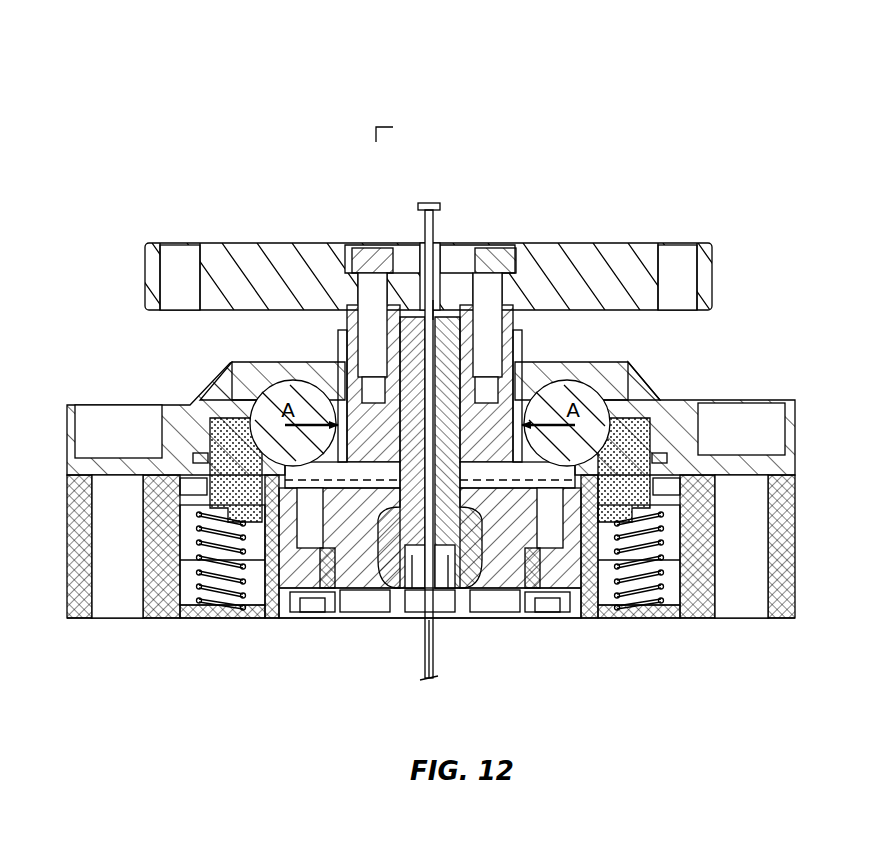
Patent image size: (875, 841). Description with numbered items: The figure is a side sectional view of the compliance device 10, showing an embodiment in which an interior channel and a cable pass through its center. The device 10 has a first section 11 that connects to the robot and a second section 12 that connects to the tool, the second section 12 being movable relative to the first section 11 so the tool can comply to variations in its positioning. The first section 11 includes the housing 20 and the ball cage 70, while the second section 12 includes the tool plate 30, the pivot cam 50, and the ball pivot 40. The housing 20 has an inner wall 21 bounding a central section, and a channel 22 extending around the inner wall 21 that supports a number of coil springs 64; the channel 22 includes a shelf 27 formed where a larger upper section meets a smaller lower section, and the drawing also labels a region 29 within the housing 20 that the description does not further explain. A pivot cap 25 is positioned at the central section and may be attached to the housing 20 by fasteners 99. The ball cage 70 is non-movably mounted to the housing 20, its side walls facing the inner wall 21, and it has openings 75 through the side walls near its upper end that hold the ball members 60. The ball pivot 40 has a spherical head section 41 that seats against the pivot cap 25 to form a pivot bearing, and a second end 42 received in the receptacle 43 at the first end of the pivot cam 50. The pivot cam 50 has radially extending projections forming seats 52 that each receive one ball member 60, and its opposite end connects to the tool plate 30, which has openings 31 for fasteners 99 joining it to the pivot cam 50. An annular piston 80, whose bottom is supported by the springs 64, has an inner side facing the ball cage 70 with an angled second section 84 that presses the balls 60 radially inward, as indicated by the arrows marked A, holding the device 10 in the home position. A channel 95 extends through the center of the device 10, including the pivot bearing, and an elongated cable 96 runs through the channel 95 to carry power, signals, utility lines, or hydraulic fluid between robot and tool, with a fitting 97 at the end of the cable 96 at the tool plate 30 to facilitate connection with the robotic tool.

The device 10 is at (172, 140).
The first section 11 is at (773, 266).
The second section 12 is at (762, 653).
The housing 20 is at (796, 512).
The inner wall 21 is at (257, 582).
The channel 22 is at (152, 592).
The pivot cap 25 is at (520, 614).
The shelf 27 is at (172, 592).
The cavity 29 is at (106, 566).
The tool plate 30 is at (245, 258).
The openings 31 is at (350, 245).
The ball pivot 40 is at (380, 588).
The spherical head section 41 is at (505, 580).
The second end 42 is at (412, 323).
The receptacle 43 is at (440, 307).
The pivot cam 50 is at (525, 330).
The seats 52 is at (335, 393).
The ball members 60 is at (268, 409).
The coil springs 64 is at (225, 592).
The ball cage 70 is at (353, 530).
The openings 75 is at (265, 383).
The piston 80 is at (640, 463).
The second section 84 is at (217, 443).
The channel 95 is at (417, 490).
The cable 96 is at (430, 622).
The fitting 97 is at (431, 207).
The fasteners 99 is at (364, 243).